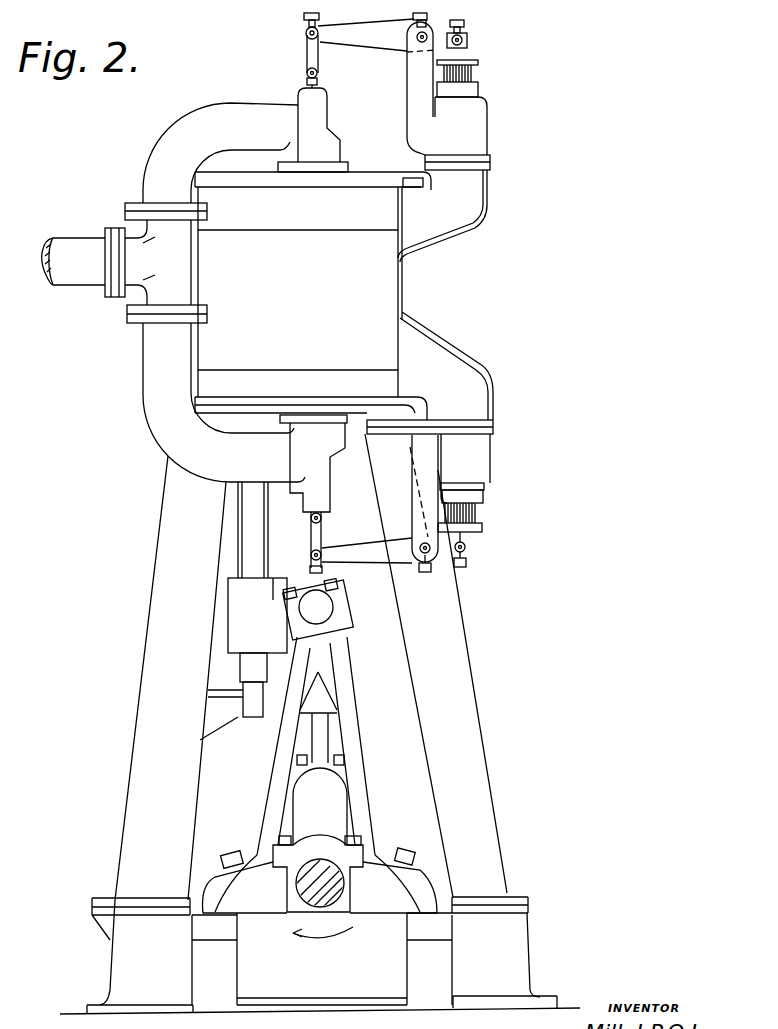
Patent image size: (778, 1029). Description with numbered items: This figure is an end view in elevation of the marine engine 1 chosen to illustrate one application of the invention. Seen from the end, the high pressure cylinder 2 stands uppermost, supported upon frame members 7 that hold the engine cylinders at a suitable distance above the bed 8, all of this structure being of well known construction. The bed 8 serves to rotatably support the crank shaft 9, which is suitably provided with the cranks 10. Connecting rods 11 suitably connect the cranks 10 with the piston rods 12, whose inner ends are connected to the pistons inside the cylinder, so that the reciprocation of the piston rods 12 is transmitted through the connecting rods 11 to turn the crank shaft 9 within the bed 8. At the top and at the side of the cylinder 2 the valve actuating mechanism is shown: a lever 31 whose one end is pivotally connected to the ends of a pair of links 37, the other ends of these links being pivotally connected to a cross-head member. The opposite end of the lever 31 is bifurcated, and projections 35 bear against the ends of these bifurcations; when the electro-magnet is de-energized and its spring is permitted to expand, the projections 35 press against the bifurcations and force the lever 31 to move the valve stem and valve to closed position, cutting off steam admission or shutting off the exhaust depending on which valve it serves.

The marine engine 1 is at (153, 553).
The high pressure cylinder 2 is at (344, 261).
The frame members 7 is at (150, 808).
The bed 8 is at (320, 963).
The crank shaft 9 is at (323, 895).
The cranks 10 is at (292, 810).
The connecting rods 11 is at (313, 755).
The piston rods 12 is at (306, 536).
The lever 31 is at (366, 35).
The projections 35 is at (466, 48).
The links 37 is at (306, 53).